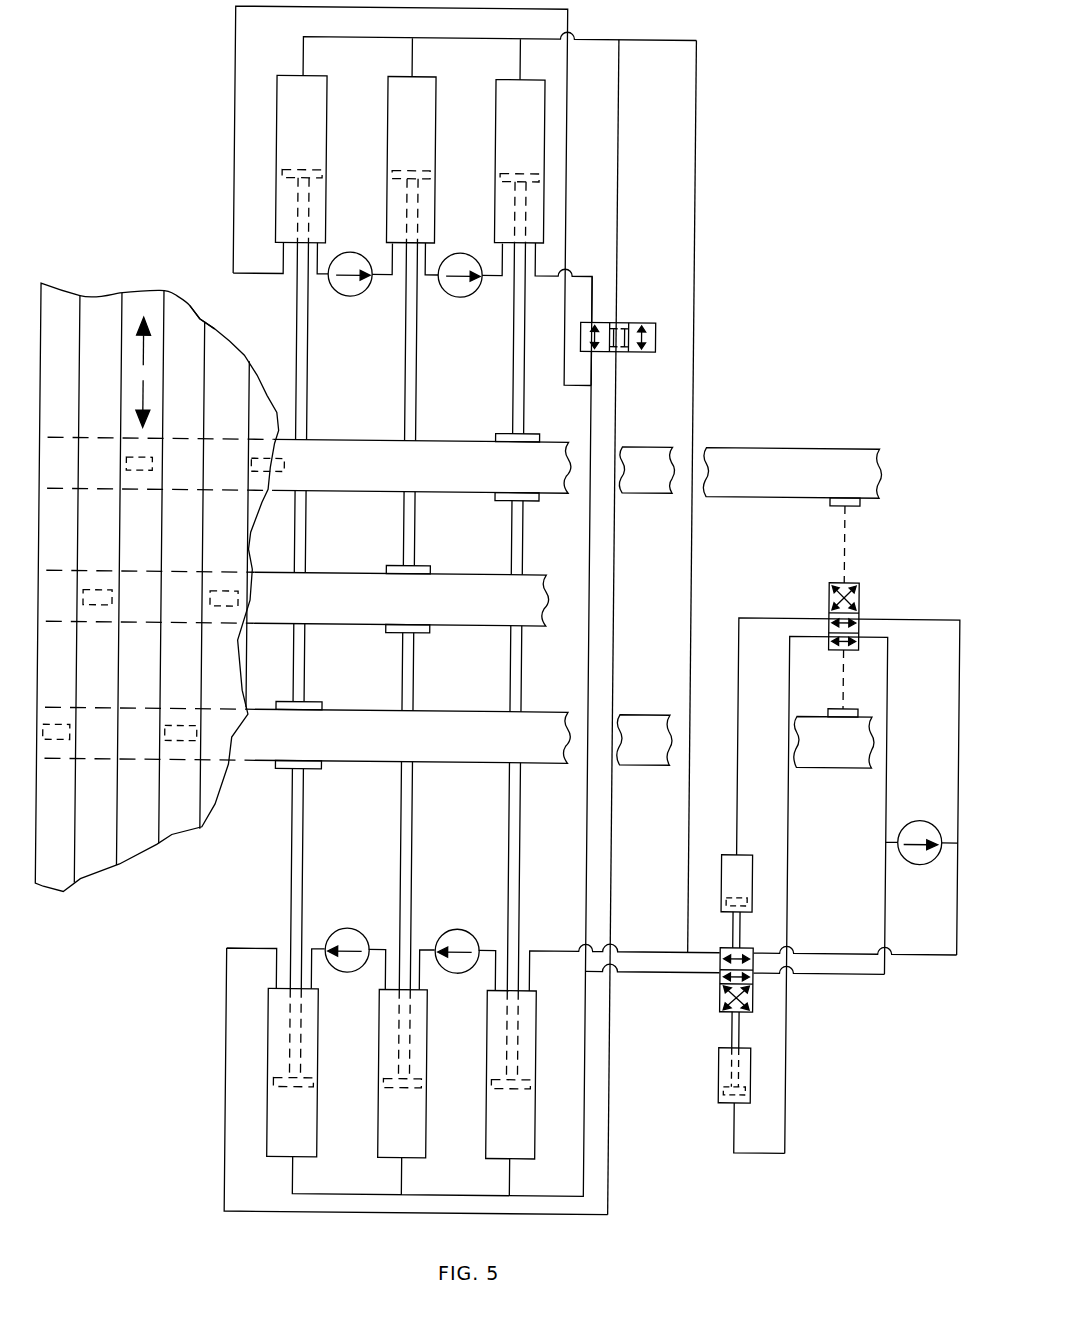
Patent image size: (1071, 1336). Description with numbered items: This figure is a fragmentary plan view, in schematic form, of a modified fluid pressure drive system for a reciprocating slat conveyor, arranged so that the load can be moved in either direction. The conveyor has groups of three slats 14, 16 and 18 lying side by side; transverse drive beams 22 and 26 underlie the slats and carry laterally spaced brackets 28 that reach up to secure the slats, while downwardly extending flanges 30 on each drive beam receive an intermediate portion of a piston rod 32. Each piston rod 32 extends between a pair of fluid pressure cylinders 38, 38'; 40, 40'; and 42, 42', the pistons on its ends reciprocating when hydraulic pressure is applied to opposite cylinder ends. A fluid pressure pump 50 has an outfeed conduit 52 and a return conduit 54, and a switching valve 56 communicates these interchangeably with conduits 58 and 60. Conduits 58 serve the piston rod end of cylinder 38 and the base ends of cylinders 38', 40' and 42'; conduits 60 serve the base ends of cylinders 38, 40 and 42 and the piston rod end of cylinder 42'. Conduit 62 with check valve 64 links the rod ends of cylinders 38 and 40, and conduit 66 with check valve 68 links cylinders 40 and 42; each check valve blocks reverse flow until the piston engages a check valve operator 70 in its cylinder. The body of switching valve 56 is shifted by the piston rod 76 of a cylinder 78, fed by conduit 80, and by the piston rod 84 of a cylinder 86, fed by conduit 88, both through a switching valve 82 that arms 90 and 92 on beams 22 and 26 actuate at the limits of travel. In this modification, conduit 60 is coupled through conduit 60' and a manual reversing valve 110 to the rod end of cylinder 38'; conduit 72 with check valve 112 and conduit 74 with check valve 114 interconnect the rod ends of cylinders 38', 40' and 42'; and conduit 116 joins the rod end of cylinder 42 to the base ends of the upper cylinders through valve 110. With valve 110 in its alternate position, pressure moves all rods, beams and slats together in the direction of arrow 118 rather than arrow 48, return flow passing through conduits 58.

The slat 14 is at (142, 295).
The slat 16 is at (199, 320).
The slat 18 is at (93, 294).
The transverse drive beam 22 is at (348, 442).
The transverse drive beam 26 is at (472, 765).
The bracket 28 is at (140, 475).
The flange 30 is at (497, 501).
The piston rod 32 is at (403, 514).
The fluid pressure cylinder 38 is at (488, 1074).
The fluid pressure cylinder 40 is at (378, 1073).
The fluid pressure cylinder 42 is at (275, 1072).
The fluid pressure cylinder 38' is at (503, 161).
The fluid pressure cylinder 40' is at (395, 159).
The fluid pressure cylinder 42' is at (286, 159).
The arrow 48 is at (140, 390).
The fluid pressure pump 50 is at (923, 817).
The outfeed conduit 52 is at (946, 848).
The return conduit 54 is at (896, 848).
The switching valve 56 is at (724, 1002).
The conduit 58 is at (692, 152).
The conduit 60 is at (569, 612).
The conduit 60' is at (560, 331).
The conduit 62 is at (484, 944).
The check valve 64 is at (448, 931).
The conduit 66 is at (374, 944).
The check valve 68 is at (338, 931).
The check valve operator 70 is at (321, 212).
The conduit 72 is at (480, 286).
The conduit 74 is at (370, 284).
The piston rod 76 is at (737, 926).
The fluid pressure cylinder 78 is at (725, 853).
The conduit 80 is at (772, 616).
The switching valve 82 is at (862, 598).
The piston rod 84 is at (737, 1040).
The fluid pressure cylinder 86 is at (724, 1096).
The conduit 88 is at (791, 1060).
The arm 90 is at (832, 503).
The arm 92 is at (830, 709).
The manual reversing valve 110 is at (646, 322).
The check valve 112 is at (453, 297).
The check valve 114 is at (343, 297).
The conduit 116 is at (615, 145).
The arrow 118 is at (141, 344).